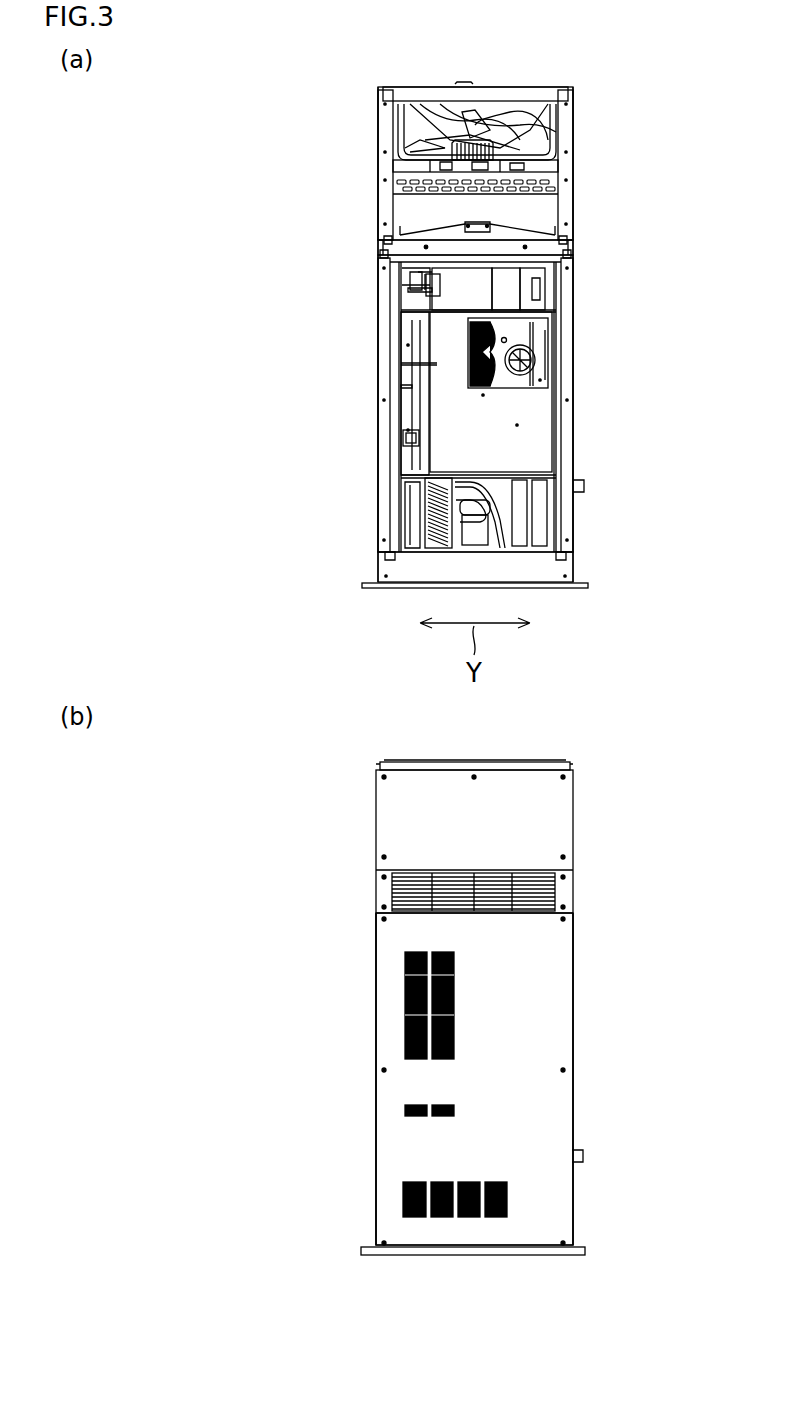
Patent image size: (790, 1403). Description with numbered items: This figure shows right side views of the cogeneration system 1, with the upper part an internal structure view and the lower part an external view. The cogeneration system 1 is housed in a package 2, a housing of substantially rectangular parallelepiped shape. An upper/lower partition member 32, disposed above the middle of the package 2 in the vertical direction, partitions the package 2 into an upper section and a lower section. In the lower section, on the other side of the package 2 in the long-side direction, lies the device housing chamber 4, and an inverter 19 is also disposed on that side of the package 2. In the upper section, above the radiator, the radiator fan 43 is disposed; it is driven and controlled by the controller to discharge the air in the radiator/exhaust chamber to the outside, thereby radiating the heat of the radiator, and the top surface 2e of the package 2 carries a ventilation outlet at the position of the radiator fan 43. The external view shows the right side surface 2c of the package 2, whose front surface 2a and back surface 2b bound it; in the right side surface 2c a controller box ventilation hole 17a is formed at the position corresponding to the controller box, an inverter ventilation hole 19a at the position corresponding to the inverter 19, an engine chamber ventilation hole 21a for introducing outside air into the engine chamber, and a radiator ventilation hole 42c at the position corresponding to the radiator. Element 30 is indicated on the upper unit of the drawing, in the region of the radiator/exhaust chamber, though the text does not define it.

The cogeneration system 1 is at (597, 67).
The package 2 is at (575, 173).
The front surface 2a is at (376, 931).
The back surface 2b is at (573, 965).
The right side surface 2c is at (545, 1028).
The top surface 2e is at (515, 762).
The device housing chamber 4 is at (400, 340).
The controller box ventilation hole 17a is at (410, 1117).
The inverter 19 is at (543, 431).
The inverter ventilation hole 19a is at (405, 1007).
The engine chamber ventilation hole 21a is at (500, 1182).
The fan unit 30 is at (533, 132).
The upper/lower partition member 32 is at (545, 250).
The radiator ventilation hole 42c is at (555, 888).
The radiator fan 43 is at (445, 110).